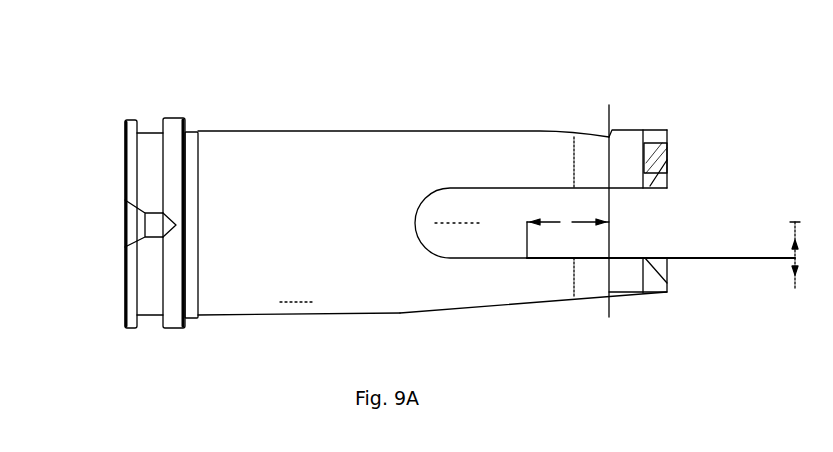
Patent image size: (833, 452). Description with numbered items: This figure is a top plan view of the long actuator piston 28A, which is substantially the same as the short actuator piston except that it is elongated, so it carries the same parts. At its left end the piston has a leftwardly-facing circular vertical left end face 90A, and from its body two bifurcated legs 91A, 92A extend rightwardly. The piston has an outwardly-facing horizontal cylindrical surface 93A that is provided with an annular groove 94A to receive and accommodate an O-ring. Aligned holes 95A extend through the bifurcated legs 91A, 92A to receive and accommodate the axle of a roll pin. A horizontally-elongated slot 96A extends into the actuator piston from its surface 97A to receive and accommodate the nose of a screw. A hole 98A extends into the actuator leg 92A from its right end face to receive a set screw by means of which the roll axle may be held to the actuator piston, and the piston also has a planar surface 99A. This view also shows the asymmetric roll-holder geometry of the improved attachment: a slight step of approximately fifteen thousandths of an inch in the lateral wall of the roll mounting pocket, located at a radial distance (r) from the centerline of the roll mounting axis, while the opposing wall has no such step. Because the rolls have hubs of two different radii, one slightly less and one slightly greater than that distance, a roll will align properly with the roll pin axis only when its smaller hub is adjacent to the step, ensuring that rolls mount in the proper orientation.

The long actuator piston 28A is at (423, 231).
The left end face 90A is at (124, 292).
The bifurcated leg 91A is at (668, 283).
The bifurcated leg 92A is at (667, 187).
The cylindrical surface 93A is at (172, 118).
The annular groove 94A is at (150, 320).
The aligned holes 95A is at (611, 140).
The horizontally-elongated slot 96A is at (270, 316).
The surface 97A is at (296, 152).
The hole 98A is at (668, 152).
The planar surface 99A is at (545, 308).